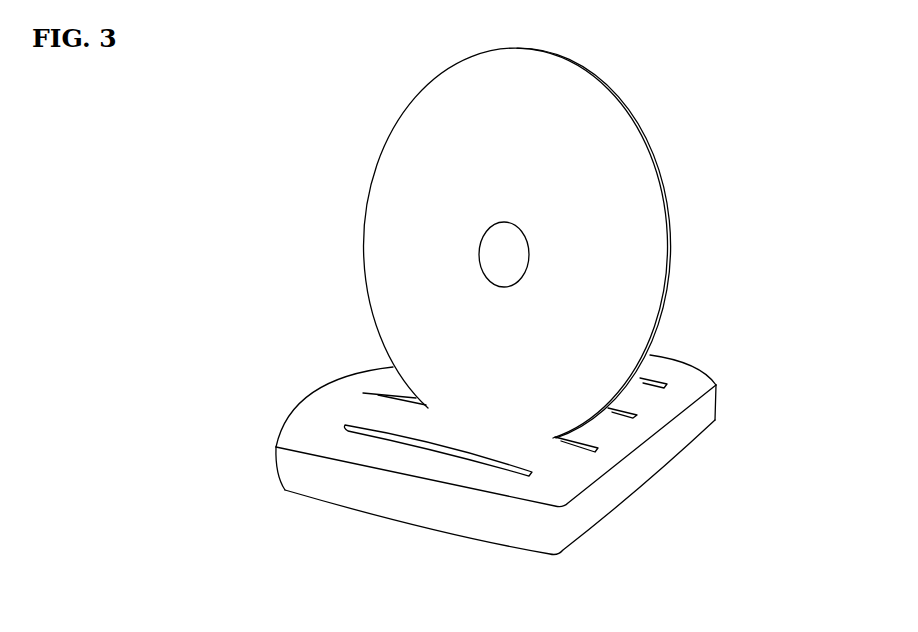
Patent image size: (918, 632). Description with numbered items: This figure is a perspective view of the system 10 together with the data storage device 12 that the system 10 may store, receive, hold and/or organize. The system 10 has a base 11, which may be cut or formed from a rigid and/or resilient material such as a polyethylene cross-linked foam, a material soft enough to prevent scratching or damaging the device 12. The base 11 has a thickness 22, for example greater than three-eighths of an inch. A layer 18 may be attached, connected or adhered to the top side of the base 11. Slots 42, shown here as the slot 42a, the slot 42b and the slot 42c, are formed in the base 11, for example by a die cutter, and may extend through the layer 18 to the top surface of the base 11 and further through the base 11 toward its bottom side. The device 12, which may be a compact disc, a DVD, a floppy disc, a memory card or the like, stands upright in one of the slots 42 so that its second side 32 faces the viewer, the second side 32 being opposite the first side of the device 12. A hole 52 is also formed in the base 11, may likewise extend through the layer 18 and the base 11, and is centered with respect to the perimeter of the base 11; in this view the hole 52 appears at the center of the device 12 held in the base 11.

The system 10 is at (762, 116).
The base 11 is at (684, 346).
The data storage device 12 is at (434, 62).
The layer 18 is at (558, 462).
The thickness 22 is at (352, 484).
The second side 32 is at (485, 75).
The slots 42 is at (660, 386).
The slot 42a is at (507, 467).
The slot 42b is at (572, 441).
The slot 42c is at (634, 414).
The hole 52 is at (538, 232).